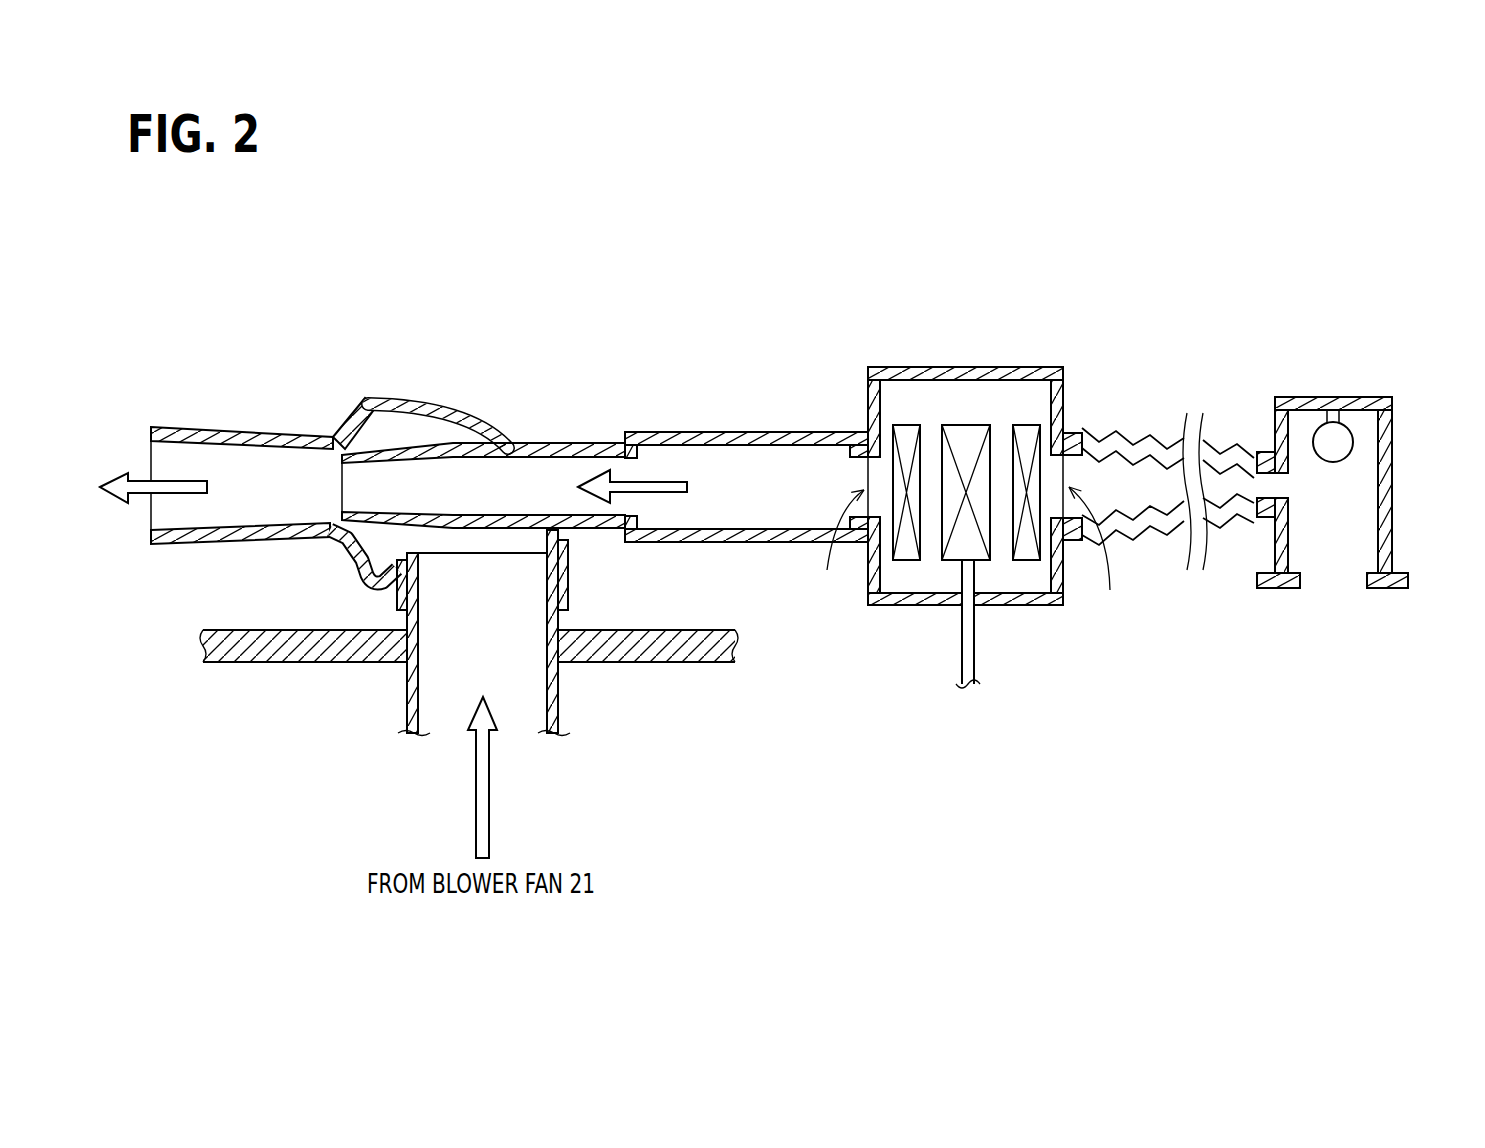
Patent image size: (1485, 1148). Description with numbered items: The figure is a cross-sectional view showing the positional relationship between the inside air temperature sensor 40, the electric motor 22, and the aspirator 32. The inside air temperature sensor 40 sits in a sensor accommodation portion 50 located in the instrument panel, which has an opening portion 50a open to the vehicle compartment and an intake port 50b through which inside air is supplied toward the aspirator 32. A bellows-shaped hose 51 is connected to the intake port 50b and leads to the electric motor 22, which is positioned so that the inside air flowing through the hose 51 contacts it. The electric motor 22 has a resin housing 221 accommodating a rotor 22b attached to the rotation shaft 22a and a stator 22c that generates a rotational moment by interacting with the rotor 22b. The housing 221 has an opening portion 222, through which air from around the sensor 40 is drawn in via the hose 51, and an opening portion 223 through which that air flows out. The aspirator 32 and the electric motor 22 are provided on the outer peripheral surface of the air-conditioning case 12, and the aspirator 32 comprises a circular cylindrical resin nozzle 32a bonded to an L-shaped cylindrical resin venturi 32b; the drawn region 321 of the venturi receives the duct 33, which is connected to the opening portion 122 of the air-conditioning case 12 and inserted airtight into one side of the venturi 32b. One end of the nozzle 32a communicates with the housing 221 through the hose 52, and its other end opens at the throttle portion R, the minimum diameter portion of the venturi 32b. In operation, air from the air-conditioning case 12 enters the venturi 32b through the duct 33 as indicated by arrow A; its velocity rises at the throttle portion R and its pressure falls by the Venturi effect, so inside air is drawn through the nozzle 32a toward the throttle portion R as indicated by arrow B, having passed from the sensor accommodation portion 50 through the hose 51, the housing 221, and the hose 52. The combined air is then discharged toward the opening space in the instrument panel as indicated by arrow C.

The air-conditioning case 12 is at (678, 640).
The opening portion 122 is at (418, 652).
The aspirator 32 is at (467, 410).
The nozzle 32a is at (580, 443).
The venturi 32b is at (252, 436).
The connecting portion 321 is at (482, 603).
The duct 33 is at (558, 708).
The hose 52 is at (752, 432).
The electric motor 22 is at (975, 486).
The housing 221 is at (905, 367).
The opening portion 222 is at (1103, 556).
The opening portion 223 is at (838, 558).
The rotation shaft 22a is at (974, 664).
The rotor 22b is at (944, 536).
The stator 22c is at (902, 562).
The hose 51 is at (1108, 430).
The sensor accommodation portion 50 is at (1364, 508).
The opening portion 50a is at (1338, 582).
The intake port 50b is at (1277, 485).
The inside air temperature sensor 40 is at (1347, 424).
The arrow A is at (489, 826).
The arrow B is at (660, 470).
The arrow C is at (176, 473).
The throttle portion R is at (335, 428).